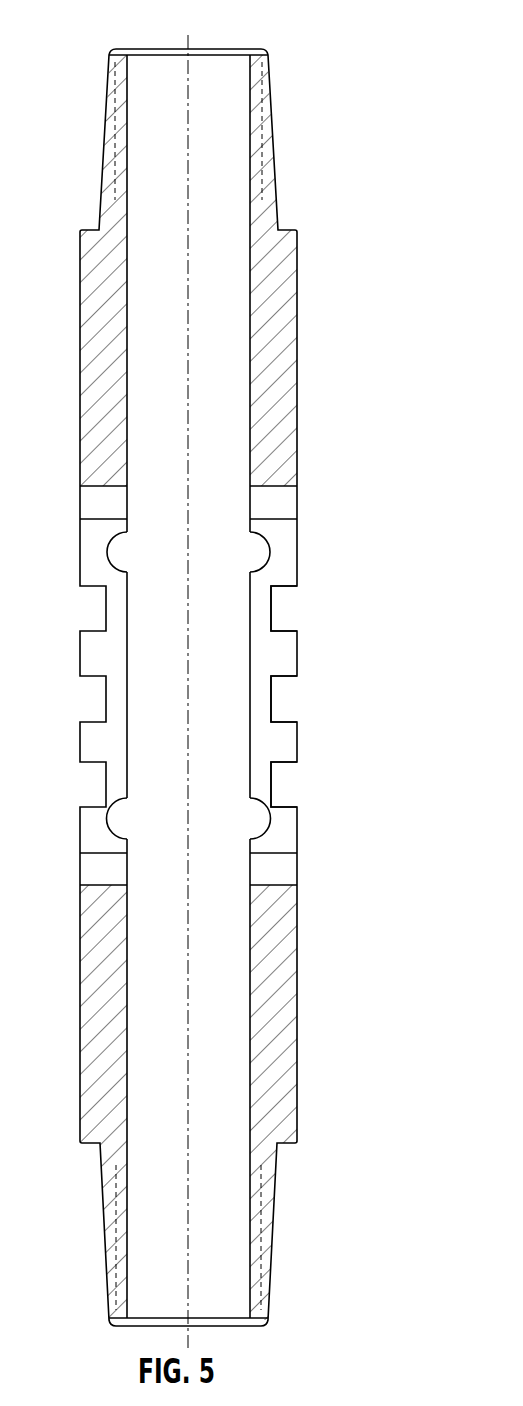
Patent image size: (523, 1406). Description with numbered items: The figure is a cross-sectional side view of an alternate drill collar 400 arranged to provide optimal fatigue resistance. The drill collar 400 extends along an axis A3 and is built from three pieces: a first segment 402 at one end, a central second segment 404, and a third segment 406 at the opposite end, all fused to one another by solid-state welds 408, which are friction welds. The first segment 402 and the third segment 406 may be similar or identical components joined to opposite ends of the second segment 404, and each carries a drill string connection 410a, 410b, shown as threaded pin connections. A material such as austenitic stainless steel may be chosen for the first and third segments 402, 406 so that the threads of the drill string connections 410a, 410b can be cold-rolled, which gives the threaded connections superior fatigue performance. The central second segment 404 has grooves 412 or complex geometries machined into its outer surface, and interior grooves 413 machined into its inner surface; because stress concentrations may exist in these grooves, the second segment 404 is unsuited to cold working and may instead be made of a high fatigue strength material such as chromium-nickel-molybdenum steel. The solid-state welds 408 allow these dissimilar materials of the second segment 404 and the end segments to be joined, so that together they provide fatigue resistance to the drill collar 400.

The drill collar 400 is at (259, 679).
The first segment 402 is at (229, 293).
The second segment 404 is at (197, 665).
The third segment 406 is at (227, 1079).
The solid-state welds 408 is at (285, 503).
The drill string connection 410a is at (277, 123).
The drill string connection 410b is at (273, 1238).
The grooves 412 is at (287, 615).
The grooves 413 is at (115, 532).
The axis A3 is at (188, 296).